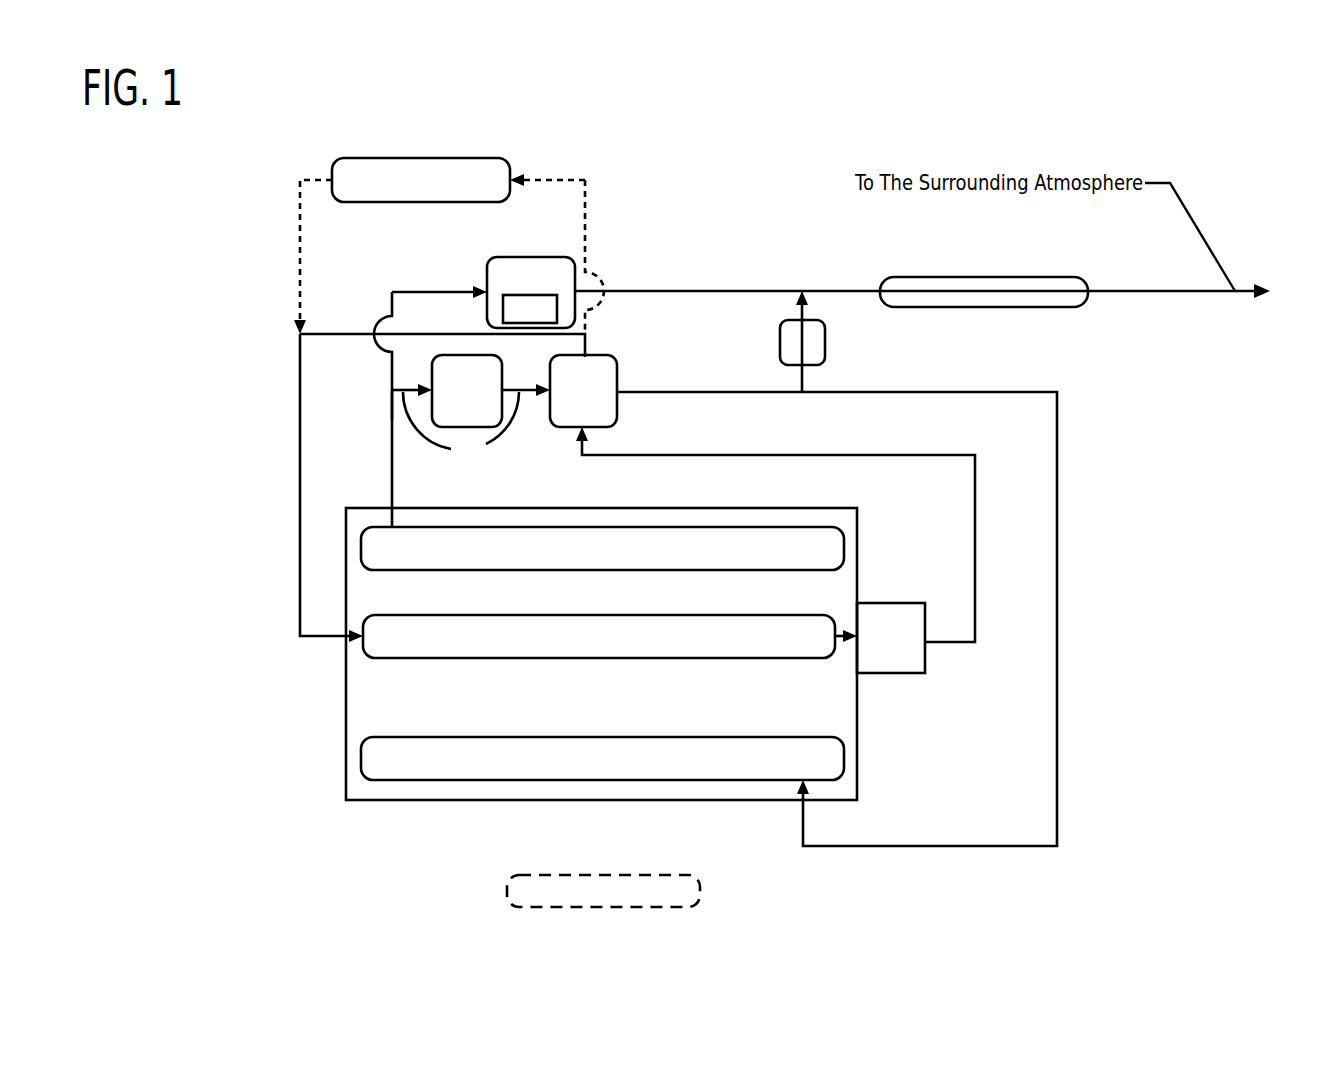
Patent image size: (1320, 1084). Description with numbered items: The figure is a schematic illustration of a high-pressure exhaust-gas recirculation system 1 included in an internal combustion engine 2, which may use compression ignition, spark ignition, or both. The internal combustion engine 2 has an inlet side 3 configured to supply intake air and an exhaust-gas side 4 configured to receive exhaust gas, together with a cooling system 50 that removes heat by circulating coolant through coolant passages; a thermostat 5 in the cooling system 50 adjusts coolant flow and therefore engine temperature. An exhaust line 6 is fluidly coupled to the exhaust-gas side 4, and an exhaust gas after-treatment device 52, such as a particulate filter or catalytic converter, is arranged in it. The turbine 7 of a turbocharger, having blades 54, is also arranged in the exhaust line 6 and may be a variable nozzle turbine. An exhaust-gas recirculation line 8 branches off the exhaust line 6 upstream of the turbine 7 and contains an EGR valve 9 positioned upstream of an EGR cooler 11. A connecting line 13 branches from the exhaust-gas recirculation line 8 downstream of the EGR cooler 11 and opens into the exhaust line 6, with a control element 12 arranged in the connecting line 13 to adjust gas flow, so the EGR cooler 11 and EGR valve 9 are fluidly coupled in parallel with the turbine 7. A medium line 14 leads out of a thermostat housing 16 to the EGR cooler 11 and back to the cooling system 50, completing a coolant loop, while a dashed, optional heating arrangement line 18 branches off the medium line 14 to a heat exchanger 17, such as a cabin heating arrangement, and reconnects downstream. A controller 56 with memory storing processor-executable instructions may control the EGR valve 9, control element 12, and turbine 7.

The high-pressure exhaust-gas recirculation system 1 is at (1132, 417).
The internal combustion engine 2 is at (346, 745).
The inlet side 3 is at (594, 770).
The exhaust-gas side 4 is at (594, 560).
The thermostat 5 is at (883, 649).
The exhaust line 6 is at (755, 291).
The turbine 7 is at (523, 295).
The exhaust-gas recirculation line 8 is at (1088, 484).
The EGR valve 9 is at (459, 402).
The EGR cooler 11 is at (571, 402).
The control element 12 is at (790, 354).
The connecting line 13 is at (804, 312).
The medium line 14 is at (300, 422).
The thermostat housing 16 is at (925, 657).
The heat exchanger 17 is at (409, 191).
The heating arrangement line 18 is at (300, 258).
The cooling system 50 is at (587, 648).
The exhaust gas after-treatment device 52 is at (972, 303).
The blades 54 is at (518, 320).
The controller 56 is at (591, 902).